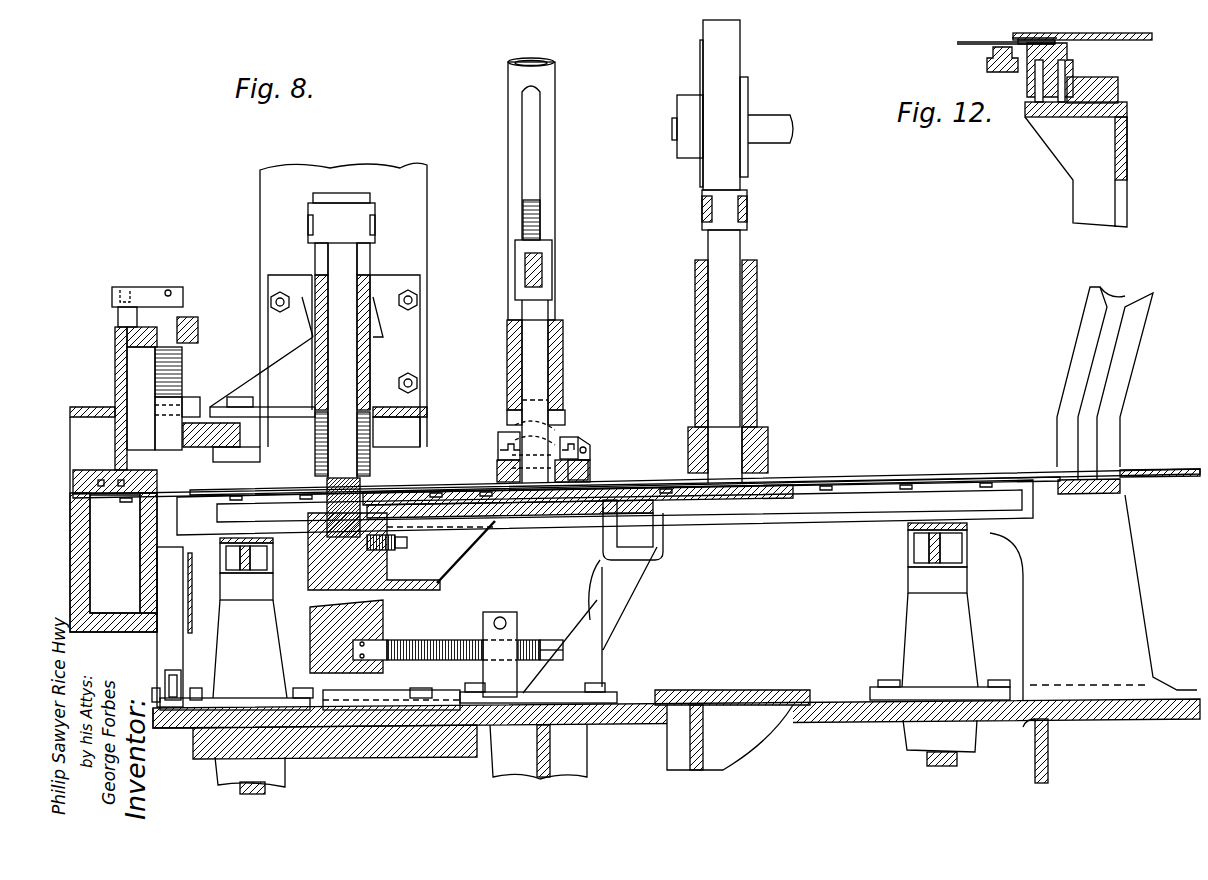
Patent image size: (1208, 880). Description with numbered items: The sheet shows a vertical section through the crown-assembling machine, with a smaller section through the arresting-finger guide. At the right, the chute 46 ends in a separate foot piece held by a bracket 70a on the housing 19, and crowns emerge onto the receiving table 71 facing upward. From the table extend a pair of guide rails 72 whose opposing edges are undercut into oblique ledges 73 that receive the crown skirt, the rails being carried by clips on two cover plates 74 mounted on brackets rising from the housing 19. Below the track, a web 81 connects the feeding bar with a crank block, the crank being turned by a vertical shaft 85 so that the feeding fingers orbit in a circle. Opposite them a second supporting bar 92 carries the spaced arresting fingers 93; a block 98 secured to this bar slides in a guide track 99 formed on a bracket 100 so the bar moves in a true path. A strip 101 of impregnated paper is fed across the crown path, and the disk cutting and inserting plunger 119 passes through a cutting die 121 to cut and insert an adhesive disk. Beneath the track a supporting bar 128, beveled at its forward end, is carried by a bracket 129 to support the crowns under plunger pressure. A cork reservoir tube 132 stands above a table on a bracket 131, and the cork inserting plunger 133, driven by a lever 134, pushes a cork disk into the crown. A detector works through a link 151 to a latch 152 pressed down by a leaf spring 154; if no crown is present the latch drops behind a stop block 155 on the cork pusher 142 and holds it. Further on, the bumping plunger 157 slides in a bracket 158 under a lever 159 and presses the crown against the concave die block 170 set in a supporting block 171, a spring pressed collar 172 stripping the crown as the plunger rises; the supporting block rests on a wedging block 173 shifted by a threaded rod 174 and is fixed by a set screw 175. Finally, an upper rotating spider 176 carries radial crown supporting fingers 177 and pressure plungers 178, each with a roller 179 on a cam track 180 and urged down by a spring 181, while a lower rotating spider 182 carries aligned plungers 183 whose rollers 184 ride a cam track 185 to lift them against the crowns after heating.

In FIG. 8, the housing 19 is at (848, 722).
In FIG. 8, the chute 46 is at (1073, 354).
In FIG. 8, the bracket 70a is at (1093, 597).
In FIG. 8, the receiving table 71 is at (1085, 493).
In FIG. 12, the guide rails 72 is at (1048, 30).
In FIG. 12, the oblique ledges 73 is at (1012, 38).
In FIG. 8, the cover plates 74 is at (1007, 476).
In FIG. 12, the cover plates 74 is at (1113, 31).
In FIG. 8, the web 81 is at (910, 541).
In FIG. 8, the vertical shaft 85 is at (257, 787).
In FIG. 8, the second supporting bar 92 is at (836, 513).
In FIG. 12, the second supporting bar 92 is at (1068, 50).
In FIG. 8, the arresting fingers 93 is at (288, 498).
In FIG. 12, the arresting fingers 93 is at (1020, 43).
In FIG. 8, the block 98 is at (628, 523).
In FIG. 12, the block 98 is at (1112, 78).
In FIG. 12, the guide track 99 is at (1127, 108).
In FIG. 8, the bracket 100 is at (626, 563).
In FIG. 12, the bracket 100 is at (1127, 157).
In FIG. 8, the strip 101 is at (723, 46).
In FIG. 8, the disk cutting and inserting plunger 119 is at (735, 245).
In FIG. 8, the cutting die 121 is at (760, 462).
In FIG. 8, the supporting bar 128 is at (757, 500).
In FIG. 12, the supporting bar 128 is at (990, 60).
In FIG. 8, the bracket 129 is at (567, 519).
In FIG. 8, the bracket 131 is at (563, 378).
In FIG. 8, the cork reservoir tube 132 is at (553, 212).
In FIG. 8, the cork inserting plunger 133 is at (535, 391).
In FIG. 8, the lever 134 is at (544, 267).
In FIG. 8, the cork pusher 142 is at (497, 466).
In FIG. 8, the link 151 is at (590, 458).
In FIG. 8, the latch 152 is at (569, 437).
In FIG. 8, the leaf spring 154 is at (515, 427).
In FIG. 8, the stop block 155 is at (498, 448).
In FIG. 8, the bumping plunger 157 is at (342, 360).
In FIG. 8, the bracket 158 is at (372, 365).
In FIG. 8, the lever 159 is at (350, 248).
In FIG. 8, the die block 170 is at (328, 492).
In FIG. 8, the supporting block 171 is at (310, 576).
In FIG. 8, the spring pressed collar 172 is at (366, 433).
In FIG. 8, the wedging block 173 is at (310, 622).
In FIG. 8, the threaded rod 174 is at (466, 644).
In FIG. 8, the set screw 175 is at (400, 550).
In FIG. 8, the upper rotating spider 176 is at (134, 393).
In FIG. 8, the crown supporting fingers 177 is at (133, 498).
In FIG. 8, the pressure plungers 178 is at (170, 428).
In FIG. 8, the roller 179 is at (199, 403).
In FIG. 8, the cam track 180 is at (221, 452).
In FIG. 8, the spring 181 is at (155, 376).
In FIG. 8, the lower rotating spider 182 is at (125, 564).
In FIG. 8, the plungers 183 is at (180, 643).
In FIG. 8, the rollers 184 is at (178, 676).
In FIG. 8, the cam track 185 is at (181, 733).